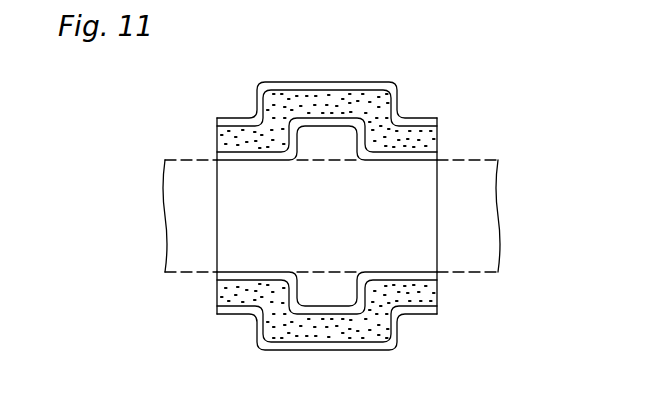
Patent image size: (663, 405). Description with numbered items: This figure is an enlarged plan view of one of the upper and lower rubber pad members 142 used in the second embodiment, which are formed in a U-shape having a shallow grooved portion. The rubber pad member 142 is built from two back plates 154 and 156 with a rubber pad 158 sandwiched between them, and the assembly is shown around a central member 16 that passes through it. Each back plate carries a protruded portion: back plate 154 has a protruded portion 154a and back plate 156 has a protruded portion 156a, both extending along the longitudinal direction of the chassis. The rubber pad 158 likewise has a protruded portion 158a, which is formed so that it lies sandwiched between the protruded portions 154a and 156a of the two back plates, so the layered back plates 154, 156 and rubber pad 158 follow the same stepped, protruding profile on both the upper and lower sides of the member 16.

The tube 16 is at (475, 174).
The rubber pad member 142 is at (426, 94).
The back plate 156 is at (293, 87).
The back plate 154 is at (304, 118).
The rubber pad 158 is at (377, 100).
The protruded portion 156a is at (278, 352).
The protruded portion 154a is at (305, 330).
The protruded portion 158a is at (368, 328).